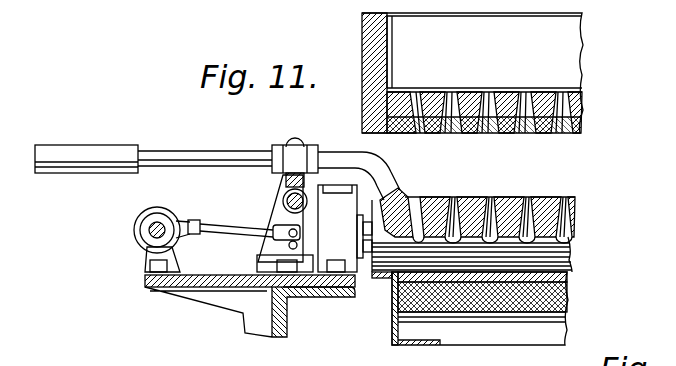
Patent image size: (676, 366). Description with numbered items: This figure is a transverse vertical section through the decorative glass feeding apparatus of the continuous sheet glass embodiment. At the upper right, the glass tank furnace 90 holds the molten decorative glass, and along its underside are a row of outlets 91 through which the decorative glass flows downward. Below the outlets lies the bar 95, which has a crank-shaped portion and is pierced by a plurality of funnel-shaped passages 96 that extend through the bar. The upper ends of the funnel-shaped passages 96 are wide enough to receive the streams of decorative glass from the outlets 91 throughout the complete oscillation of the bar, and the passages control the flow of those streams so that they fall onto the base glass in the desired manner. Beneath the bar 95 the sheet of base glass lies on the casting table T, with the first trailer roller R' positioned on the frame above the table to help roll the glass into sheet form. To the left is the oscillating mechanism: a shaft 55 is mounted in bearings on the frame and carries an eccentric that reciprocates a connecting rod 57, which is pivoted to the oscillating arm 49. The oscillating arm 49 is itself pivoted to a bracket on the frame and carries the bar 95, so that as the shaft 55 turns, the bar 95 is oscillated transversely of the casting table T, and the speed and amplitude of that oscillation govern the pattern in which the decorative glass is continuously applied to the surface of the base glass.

The glass tank furnace 90 is at (393, 95).
The outlets 91 is at (530, 96).
The bar 95 is at (336, 158).
The funnel-shaped passages 96 is at (452, 200).
The oscillating arm 49 is at (283, 189).
The connecting rod 57 is at (246, 221).
The shaft 55 is at (146, 238).
The first trailer roller R' is at (492, 236).
The casting table T is at (565, 298).